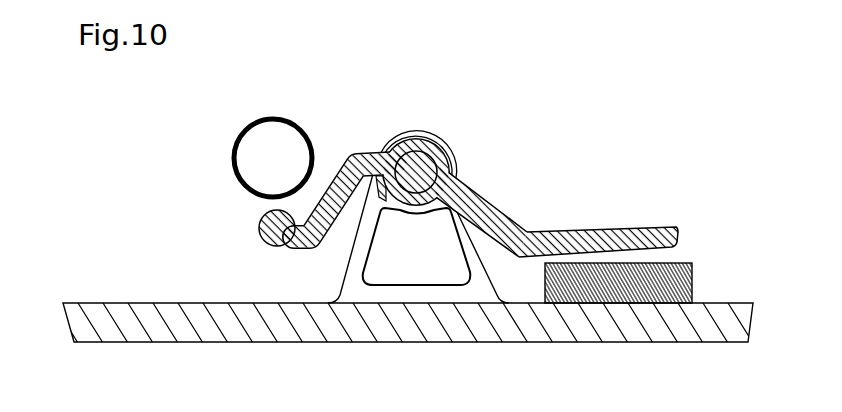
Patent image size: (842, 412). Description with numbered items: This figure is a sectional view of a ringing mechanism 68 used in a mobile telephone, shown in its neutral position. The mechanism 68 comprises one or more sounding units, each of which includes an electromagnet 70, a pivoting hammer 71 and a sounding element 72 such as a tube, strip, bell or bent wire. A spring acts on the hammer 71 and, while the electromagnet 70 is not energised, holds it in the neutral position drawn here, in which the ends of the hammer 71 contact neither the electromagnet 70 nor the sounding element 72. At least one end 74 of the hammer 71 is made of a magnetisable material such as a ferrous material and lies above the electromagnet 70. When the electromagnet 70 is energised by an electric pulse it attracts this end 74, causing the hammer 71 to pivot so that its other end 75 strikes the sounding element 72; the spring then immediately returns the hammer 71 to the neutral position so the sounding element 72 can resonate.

The ringing mechanism 68 is at (652, 90).
The electromagnet 70 is at (683, 287).
The pivoting hammer 71 is at (497, 227).
The sounding element 72 is at (275, 119).
The end of the hammer 74 is at (632, 243).
The other end of the hammer 75 is at (273, 228).